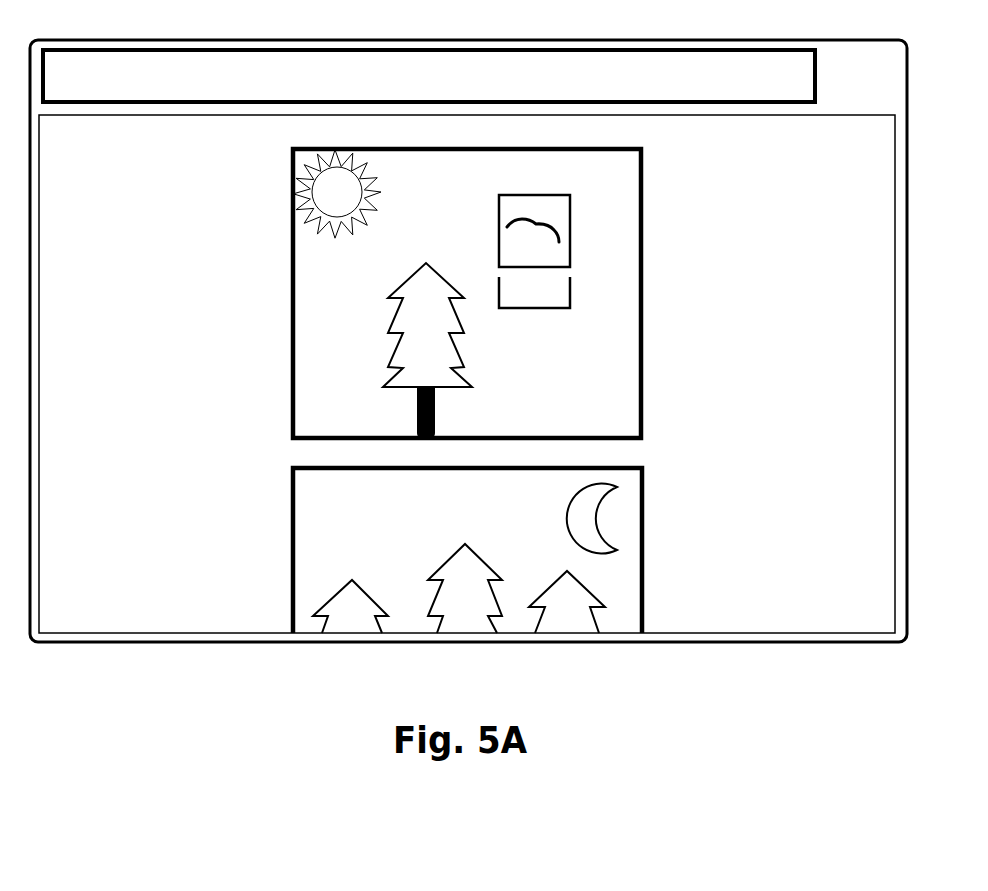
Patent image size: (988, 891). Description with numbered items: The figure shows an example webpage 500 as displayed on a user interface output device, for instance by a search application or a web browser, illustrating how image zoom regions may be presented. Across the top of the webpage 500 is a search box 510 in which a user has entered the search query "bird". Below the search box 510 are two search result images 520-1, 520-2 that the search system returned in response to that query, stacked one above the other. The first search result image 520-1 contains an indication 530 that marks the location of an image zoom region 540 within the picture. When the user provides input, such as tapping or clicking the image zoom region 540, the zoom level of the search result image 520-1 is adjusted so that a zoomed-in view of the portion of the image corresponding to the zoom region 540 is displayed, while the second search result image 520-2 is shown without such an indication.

The webpage 500 is at (480, 31).
The search box 510 is at (452, 76).
The search result image 520-1 is at (504, 293).
The search result image 520-2 is at (505, 550).
The indication 530 is at (557, 231).
The image zoom region 540 is at (534, 309).